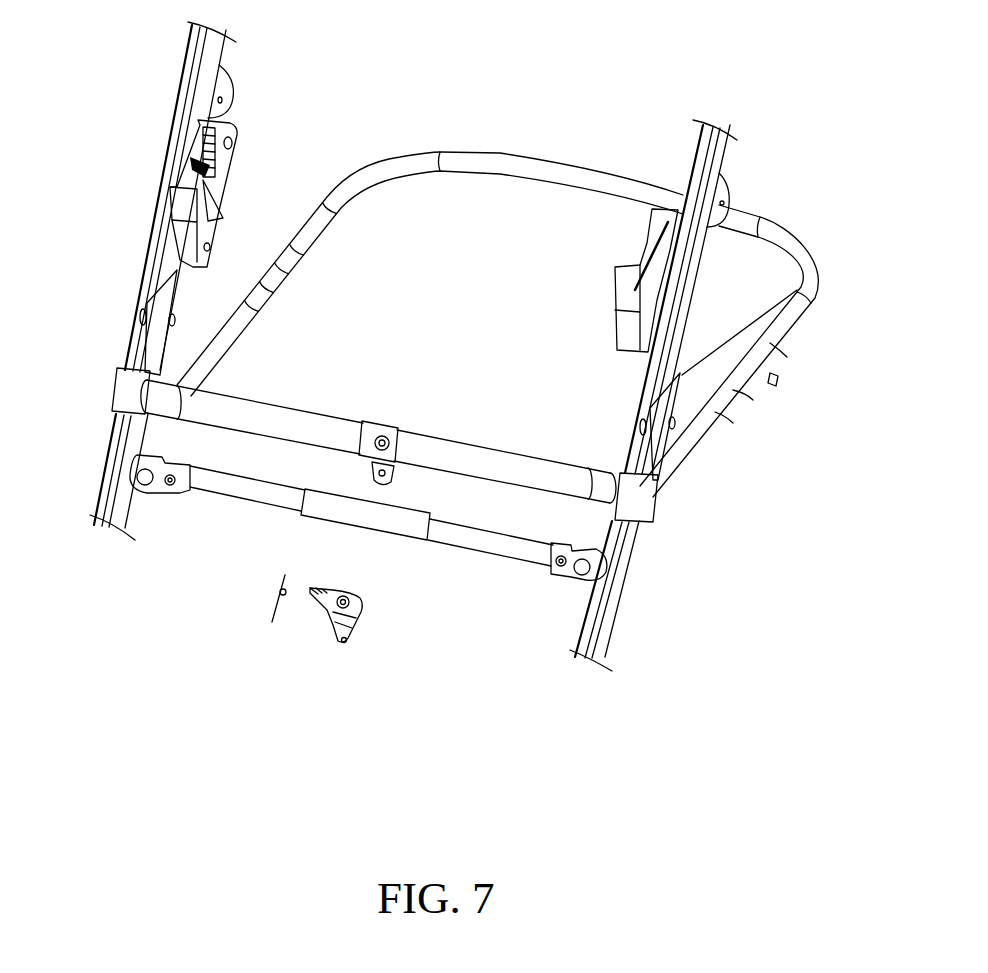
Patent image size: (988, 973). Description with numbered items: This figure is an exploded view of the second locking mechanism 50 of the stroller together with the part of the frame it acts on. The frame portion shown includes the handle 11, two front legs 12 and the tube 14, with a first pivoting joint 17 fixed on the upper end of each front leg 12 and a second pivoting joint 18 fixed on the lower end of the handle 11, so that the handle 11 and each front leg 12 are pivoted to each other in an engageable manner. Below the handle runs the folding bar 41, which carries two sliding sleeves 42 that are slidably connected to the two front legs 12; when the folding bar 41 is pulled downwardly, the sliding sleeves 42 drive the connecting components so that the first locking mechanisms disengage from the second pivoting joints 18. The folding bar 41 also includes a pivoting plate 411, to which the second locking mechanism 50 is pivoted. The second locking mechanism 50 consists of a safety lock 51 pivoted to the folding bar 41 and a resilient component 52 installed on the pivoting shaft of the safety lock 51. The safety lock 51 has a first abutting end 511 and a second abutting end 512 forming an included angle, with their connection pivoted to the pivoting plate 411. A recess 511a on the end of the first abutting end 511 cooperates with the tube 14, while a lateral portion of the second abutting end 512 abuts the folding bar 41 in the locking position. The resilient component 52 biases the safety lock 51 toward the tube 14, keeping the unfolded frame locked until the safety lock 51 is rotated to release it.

The handle 11 is at (190, 90).
The front leg 12 is at (110, 480).
The tube 14 is at (390, 520).
The first pivoting joint 17 is at (135, 353).
The second pivoting joint 18 is at (150, 275).
The folding bar 41 is at (487, 467).
The pivoting plate 411 is at (385, 435).
The sliding sleeve 42 is at (628, 498).
The second locking mechanism 50 is at (232, 723).
The safety lock 51 is at (327, 618).
The first abutting end 511 is at (352, 622).
The recess 511a is at (345, 643).
The second abutting end 512 is at (317, 583).
The resilient component 52 is at (272, 607).